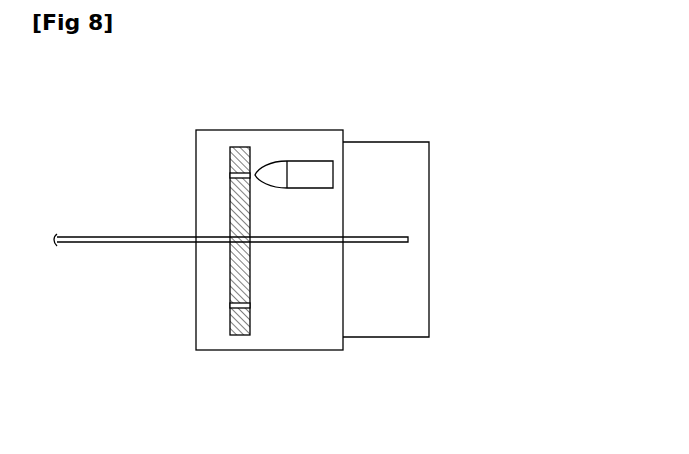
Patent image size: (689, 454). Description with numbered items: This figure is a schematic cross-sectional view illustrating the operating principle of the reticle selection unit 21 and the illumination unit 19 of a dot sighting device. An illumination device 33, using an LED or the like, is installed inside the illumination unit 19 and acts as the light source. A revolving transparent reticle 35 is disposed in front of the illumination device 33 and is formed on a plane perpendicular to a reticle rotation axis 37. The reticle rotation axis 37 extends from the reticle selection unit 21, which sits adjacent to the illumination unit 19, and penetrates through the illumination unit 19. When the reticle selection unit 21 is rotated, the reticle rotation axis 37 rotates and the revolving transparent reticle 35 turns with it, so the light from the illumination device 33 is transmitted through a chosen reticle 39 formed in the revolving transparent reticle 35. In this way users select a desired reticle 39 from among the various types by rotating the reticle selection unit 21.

The illumination unit 19 is at (348, 357).
The reticle selection unit 21 is at (416, 172).
The illumination device 33 is at (272, 175).
The revolving transparent reticle 35 is at (228, 279).
The reticle rotation axis 37 is at (393, 243).
The reticle 39 is at (233, 175).